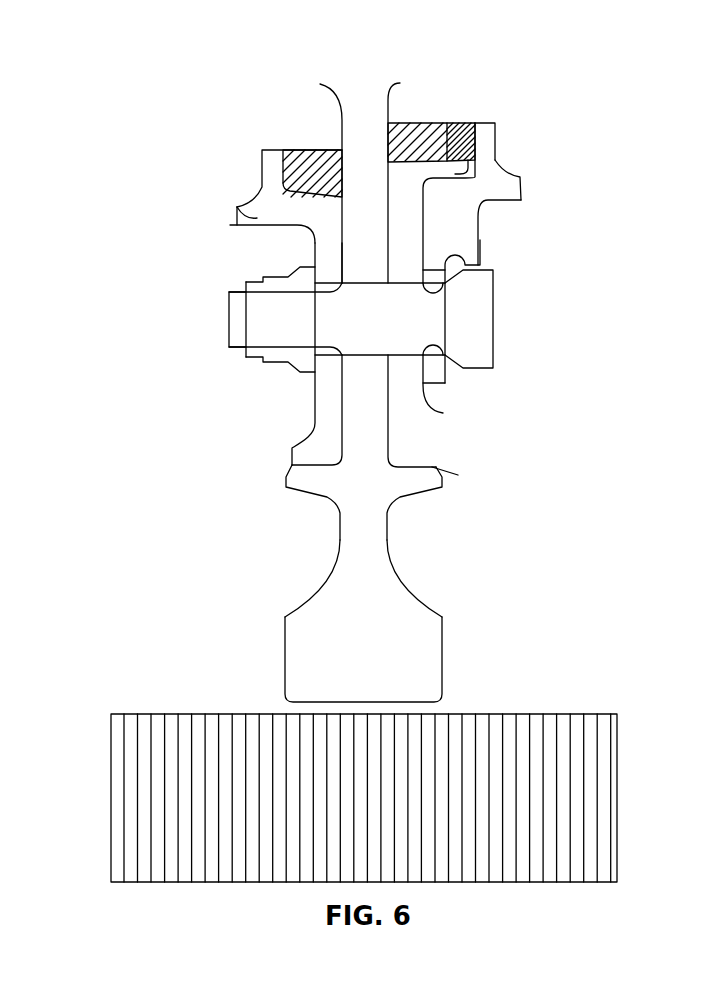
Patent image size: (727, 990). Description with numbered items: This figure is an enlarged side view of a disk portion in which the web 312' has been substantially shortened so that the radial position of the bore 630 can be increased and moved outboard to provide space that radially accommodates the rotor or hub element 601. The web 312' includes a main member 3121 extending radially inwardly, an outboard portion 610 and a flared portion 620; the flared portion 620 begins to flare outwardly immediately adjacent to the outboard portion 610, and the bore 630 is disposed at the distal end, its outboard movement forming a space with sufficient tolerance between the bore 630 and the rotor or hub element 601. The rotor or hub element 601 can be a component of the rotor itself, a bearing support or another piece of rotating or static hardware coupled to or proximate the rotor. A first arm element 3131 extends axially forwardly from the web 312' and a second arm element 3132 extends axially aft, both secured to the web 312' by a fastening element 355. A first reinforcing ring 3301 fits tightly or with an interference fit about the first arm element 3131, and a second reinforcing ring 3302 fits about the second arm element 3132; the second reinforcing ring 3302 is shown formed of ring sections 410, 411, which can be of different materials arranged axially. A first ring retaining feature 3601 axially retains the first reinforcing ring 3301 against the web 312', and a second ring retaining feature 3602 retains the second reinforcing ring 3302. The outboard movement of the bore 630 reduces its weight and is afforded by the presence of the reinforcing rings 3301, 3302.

The web 312' is at (325, 322).
The main member 3121 is at (357, 423).
The outboard portion 610 is at (408, 483).
The flared portion 620 is at (397, 563).
The bore 630 is at (415, 690).
The first ring retaining feature 3601 is at (277, 160).
The first reinforcing ring 3301 is at (297, 157).
The first arm element 3131 is at (237, 207).
The ring section 410 is at (437, 137).
The second reinforcing ring 3302 is at (433, 137).
The ring section 411 is at (483, 123).
The second ring retaining feature 3602 is at (485, 160).
The second arm element 3132 is at (498, 183).
The fastening element 355 is at (460, 308).
The rotor or hub element 601 is at (140, 790).